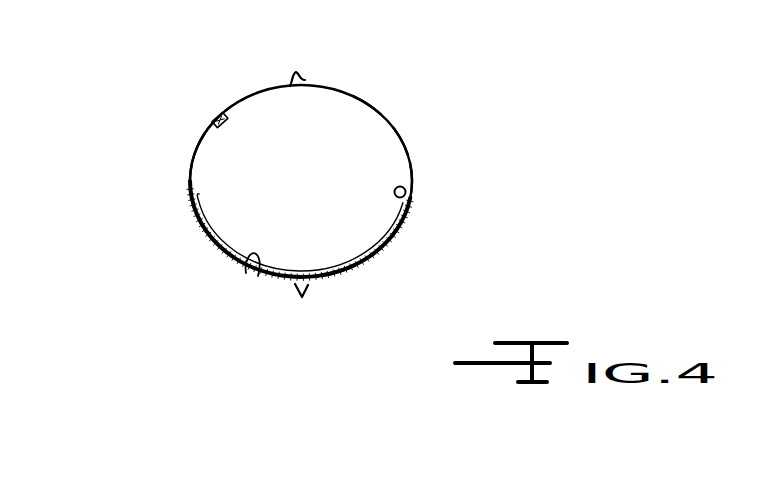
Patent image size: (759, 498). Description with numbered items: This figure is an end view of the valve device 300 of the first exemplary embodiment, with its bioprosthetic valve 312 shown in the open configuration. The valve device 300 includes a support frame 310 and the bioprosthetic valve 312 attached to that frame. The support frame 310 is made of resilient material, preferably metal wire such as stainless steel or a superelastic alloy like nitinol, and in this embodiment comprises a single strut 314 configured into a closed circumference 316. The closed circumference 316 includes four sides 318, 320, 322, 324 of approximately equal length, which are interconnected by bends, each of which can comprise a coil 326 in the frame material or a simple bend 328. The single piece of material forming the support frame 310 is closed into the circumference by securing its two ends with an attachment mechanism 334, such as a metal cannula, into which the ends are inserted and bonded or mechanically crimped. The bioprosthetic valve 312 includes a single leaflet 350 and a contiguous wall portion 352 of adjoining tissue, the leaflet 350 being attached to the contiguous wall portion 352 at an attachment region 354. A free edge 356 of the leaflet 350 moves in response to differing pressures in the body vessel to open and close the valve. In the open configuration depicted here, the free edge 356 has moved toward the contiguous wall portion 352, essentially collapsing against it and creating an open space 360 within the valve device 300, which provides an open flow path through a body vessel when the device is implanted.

The valve device 300 is at (210, 256).
The support frame 310 is at (366, 107).
The bioprosthetic valve 312 is at (392, 243).
The single strut 314 is at (197, 147).
The closed circumference 316 is at (245, 100).
The side 318 is at (403, 227).
The side 320 is at (195, 222).
The side 322 is at (398, 142).
The side 324 is at (208, 128).
The coil 326 is at (190, 178).
The simple bend 328 is at (303, 79).
The attachment mechanism 334 is at (216, 112).
The leaflet 350 is at (377, 257).
The contiguous wall portion 352 is at (353, 275).
The attachment region 354 is at (405, 205).
The free edge 356 is at (247, 273).
The open space 360 is at (312, 168).